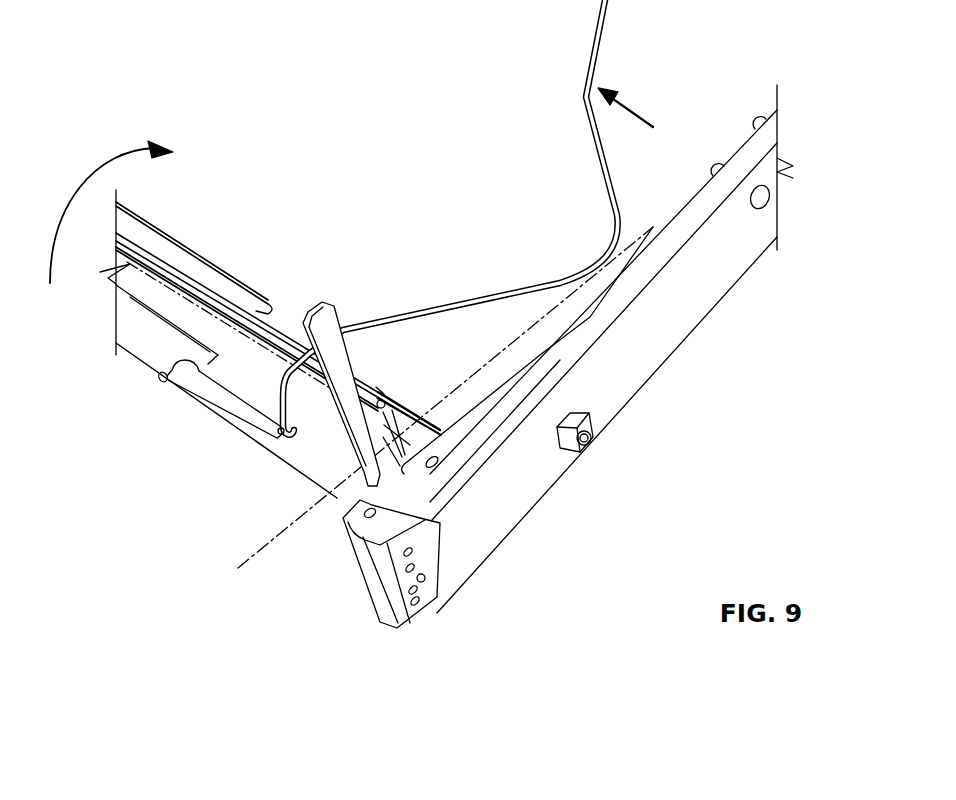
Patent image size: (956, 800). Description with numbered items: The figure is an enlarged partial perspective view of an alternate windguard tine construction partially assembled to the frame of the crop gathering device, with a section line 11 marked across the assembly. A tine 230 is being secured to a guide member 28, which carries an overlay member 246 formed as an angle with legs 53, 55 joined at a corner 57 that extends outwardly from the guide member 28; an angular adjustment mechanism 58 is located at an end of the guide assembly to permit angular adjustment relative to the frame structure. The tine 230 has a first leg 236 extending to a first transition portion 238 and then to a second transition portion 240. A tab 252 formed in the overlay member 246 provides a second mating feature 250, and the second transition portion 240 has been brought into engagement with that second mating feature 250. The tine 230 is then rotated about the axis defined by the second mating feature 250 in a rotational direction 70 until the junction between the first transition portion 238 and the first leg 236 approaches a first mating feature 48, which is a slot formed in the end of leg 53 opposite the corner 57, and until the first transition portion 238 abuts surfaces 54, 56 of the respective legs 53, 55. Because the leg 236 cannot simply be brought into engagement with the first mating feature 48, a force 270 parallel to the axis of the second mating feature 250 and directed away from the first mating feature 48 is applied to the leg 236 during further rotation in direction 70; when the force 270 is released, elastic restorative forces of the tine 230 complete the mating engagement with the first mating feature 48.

The section line / main rail 11 is at (240, 570).
The guide member 28 is at (340, 505).
The first mating feature 48 is at (378, 392).
The leg 53 is at (200, 270).
The surface 54 is at (163, 247).
The leg 55 is at (158, 300).
The surface 56 is at (128, 305).
The corner 57 is at (147, 283).
The angular adjustment mechanism 58 is at (352, 565).
The rotational direction 70 is at (100, 167).
The tine 230 is at (654, 30).
The first leg 236 is at (423, 305).
The first transition portion 238 is at (298, 393).
The second transition portion 240 is at (181, 392).
The overlay member 246 is at (128, 224).
The second mating feature 250 is at (280, 440).
The tab 252 is at (235, 402).
The force 270 is at (636, 110).